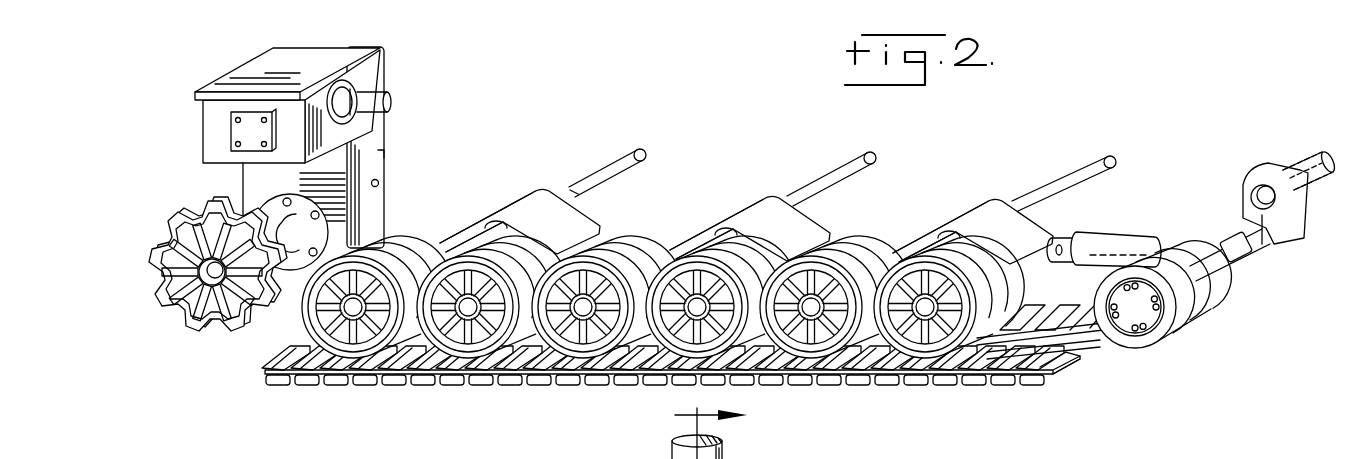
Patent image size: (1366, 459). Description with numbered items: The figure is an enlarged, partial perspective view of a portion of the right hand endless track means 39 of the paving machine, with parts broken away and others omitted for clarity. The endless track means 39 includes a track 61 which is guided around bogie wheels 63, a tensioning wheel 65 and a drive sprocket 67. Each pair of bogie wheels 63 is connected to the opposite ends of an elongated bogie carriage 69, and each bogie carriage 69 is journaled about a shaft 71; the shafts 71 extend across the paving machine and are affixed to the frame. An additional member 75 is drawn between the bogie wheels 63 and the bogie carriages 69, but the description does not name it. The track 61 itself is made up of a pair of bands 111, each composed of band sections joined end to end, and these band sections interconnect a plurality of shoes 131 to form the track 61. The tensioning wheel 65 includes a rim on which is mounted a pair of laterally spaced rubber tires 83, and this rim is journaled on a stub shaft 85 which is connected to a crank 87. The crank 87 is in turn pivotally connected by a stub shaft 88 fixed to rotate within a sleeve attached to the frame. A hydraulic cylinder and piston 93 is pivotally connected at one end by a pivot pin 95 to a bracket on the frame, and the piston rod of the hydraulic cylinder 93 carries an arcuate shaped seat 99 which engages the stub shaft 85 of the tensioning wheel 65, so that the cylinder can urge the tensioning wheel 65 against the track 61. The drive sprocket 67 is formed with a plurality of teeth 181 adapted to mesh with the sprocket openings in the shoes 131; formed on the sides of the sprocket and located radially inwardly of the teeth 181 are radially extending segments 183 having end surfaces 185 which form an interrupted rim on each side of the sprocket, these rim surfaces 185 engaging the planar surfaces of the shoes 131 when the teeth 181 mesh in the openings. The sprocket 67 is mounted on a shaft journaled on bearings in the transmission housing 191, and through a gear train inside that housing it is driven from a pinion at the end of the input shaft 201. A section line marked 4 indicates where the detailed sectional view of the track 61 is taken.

The endless track means 39 is at (1090, 378).
The track 61 is at (967, 392).
The bands 111 is at (1043, 370).
The transmission housing 191 is at (362, 163).
The input shaft 201 is at (390, 99).
The drive sprocket 67 is at (210, 276).
The teeth 181 is at (194, 210).
The radially extending segments 183 is at (168, 262).
The end surfaces 185 is at (170, 288).
The axle shaft 75 is at (596, 227).
The bogie carriage 69 is at (541, 198).
The shaft 71 is at (647, 150).
The pivot pin 95 is at (1062, 240).
The hydraulic cylinder and piston 93 is at (1115, 238).
The stub shaft 85 is at (1258, 252).
The arcuate shaped seat 99 is at (1245, 232).
The crank 87 is at (1282, 185).
The stub shaft 88 is at (1320, 160).
The bogie wheels 63 is at (473, 233).
The shoes 131 is at (1092, 340).
The tensioning wheel 65 is at (1194, 301).
The rubber tires 83 is at (1190, 322).
The section line 4 is at (700, 433).